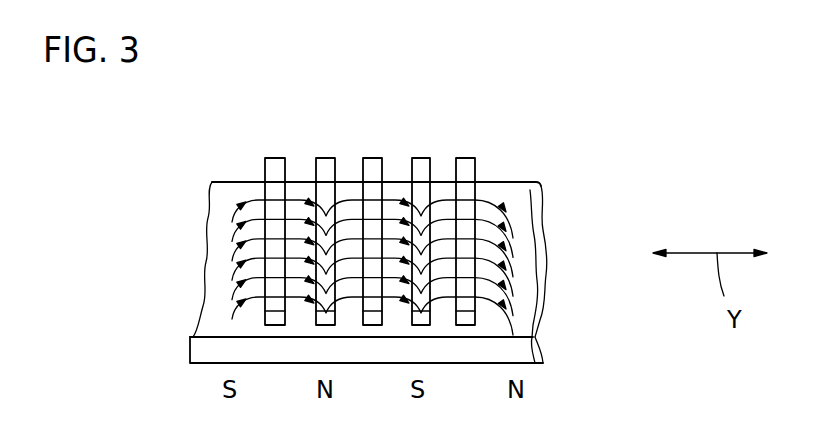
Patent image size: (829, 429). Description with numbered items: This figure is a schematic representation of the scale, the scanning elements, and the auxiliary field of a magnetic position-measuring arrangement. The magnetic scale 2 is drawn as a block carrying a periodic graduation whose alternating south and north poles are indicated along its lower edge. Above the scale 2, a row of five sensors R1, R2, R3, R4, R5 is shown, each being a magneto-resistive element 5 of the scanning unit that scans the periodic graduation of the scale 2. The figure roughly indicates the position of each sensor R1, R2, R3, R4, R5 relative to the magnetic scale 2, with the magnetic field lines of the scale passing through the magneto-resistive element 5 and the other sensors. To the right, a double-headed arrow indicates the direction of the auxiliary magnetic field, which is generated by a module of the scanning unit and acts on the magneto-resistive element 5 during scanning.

The scale 2 is at (522, 190).
The magneto-resistive element 5 is at (270, 233).
The sensor R1 is at (272, 170).
The sensor R2 is at (325, 165).
The sensor R3 is at (368, 170).
The sensor R4 is at (422, 163).
The sensor R5 is at (461, 173).